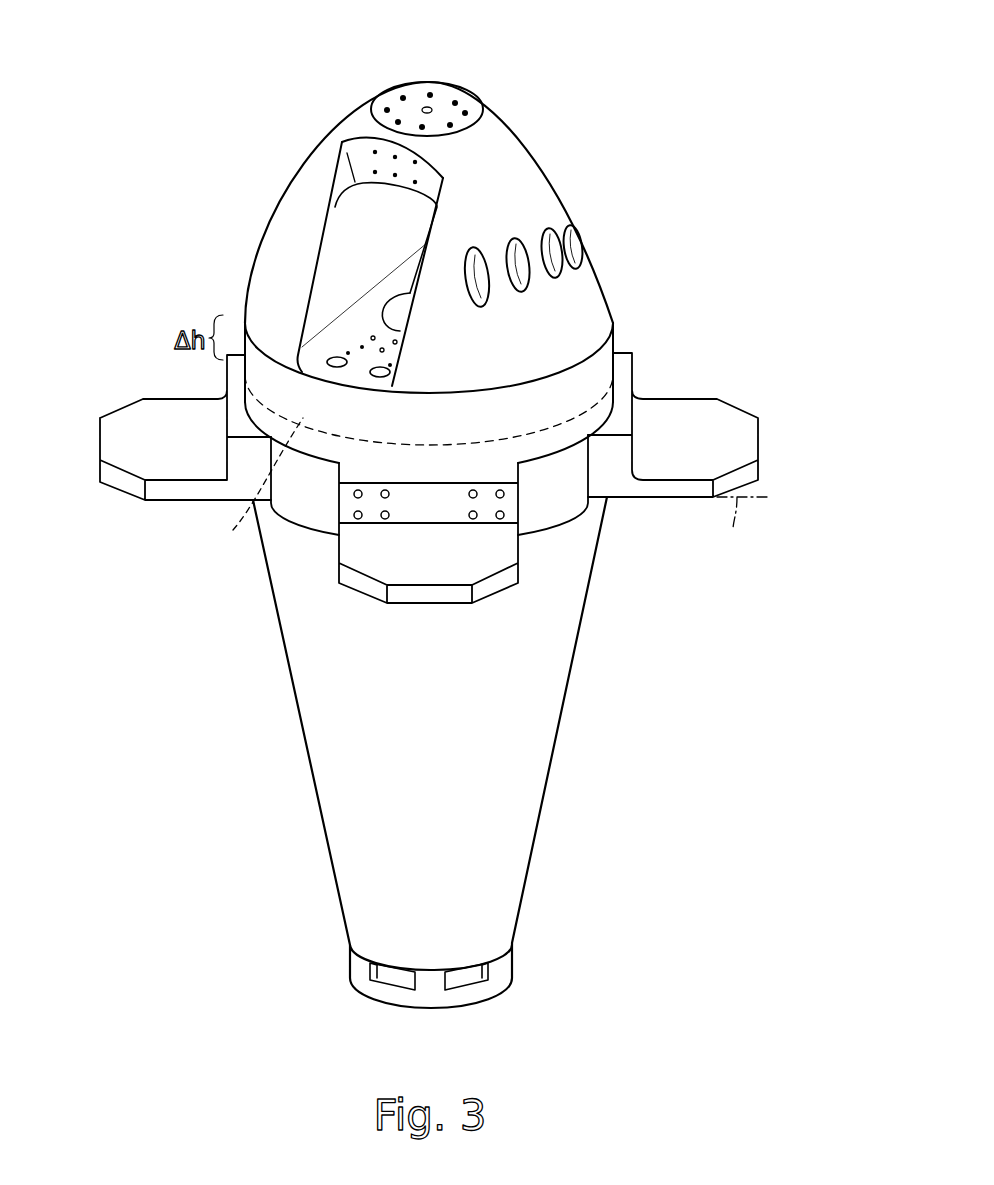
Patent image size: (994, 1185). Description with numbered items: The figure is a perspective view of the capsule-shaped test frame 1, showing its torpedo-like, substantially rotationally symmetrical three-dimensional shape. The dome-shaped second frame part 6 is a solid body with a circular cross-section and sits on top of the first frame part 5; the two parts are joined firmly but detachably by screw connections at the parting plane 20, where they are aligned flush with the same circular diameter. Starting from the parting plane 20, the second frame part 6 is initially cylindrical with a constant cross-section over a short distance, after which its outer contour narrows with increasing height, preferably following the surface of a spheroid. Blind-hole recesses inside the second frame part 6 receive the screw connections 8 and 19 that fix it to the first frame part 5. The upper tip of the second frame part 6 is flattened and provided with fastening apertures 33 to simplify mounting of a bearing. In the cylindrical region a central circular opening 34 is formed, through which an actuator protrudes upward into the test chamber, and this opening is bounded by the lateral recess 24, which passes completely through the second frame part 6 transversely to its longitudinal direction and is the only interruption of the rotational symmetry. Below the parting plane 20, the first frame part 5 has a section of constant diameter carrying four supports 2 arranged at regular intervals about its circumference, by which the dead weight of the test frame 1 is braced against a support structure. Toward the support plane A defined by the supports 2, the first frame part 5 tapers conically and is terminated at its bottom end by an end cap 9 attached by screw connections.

The test frame 1 is at (230, 124).
The second frame part 6 is at (613, 1010).
The fastening apertures 33 is at (442, 104).
The central circular opening 34 is at (402, 293).
The lateral recess 24 is at (336, 260).
The screw connections 19 is at (368, 357).
The screw connections 8 is at (555, 250).
The supports 2 is at (673, 418).
The parting plane 20 is at (250, 485).
The first frame part 5 is at (623, 681).
The end cap 9 is at (360, 980).
The support plane A is at (742, 528).